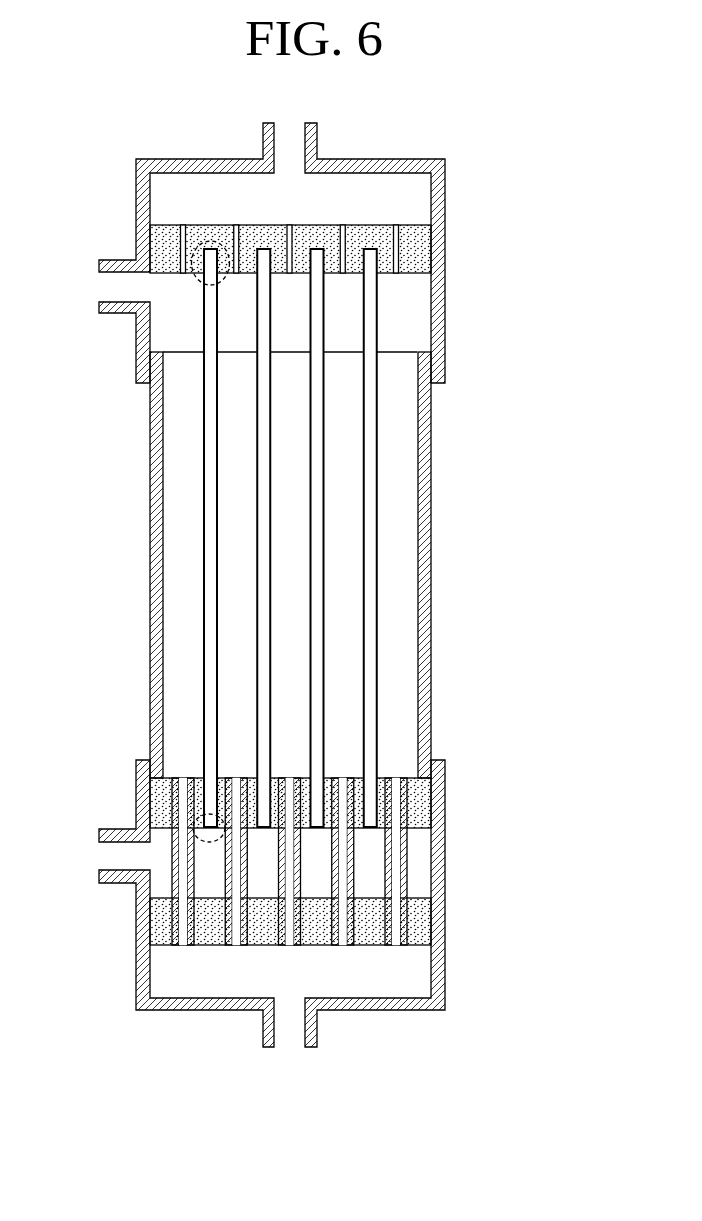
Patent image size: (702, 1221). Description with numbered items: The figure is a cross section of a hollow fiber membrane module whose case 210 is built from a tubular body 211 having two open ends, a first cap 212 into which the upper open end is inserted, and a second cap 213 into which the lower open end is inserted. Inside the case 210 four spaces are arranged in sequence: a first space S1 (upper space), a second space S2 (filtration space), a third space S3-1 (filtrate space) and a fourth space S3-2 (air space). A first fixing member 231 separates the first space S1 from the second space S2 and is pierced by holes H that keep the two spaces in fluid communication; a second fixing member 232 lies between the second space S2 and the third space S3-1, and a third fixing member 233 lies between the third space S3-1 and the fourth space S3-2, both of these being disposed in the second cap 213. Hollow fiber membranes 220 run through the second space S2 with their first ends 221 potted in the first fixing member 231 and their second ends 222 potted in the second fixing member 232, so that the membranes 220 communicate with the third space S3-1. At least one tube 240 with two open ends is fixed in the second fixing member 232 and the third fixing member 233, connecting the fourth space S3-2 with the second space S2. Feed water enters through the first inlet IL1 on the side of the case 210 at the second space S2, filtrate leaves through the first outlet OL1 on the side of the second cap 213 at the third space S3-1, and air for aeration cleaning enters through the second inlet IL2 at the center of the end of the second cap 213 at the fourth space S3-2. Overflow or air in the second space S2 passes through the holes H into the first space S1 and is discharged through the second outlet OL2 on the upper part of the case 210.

The case 210 is at (318, 575).
The tubular body 211 is at (431, 567).
The first cap 212 is at (289, 299).
The second cap 213 is at (287, 847).
The hollow fiber membranes 220 is at (204, 600).
The first end 221 is at (224, 247).
The second end 222 is at (204, 777).
The first fixing member 231 is at (378, 230).
The second fixing member 232 is at (420, 812).
The third fixing member 233 is at (420, 918).
The tube 240 is at (150, 885).
The holes H is at (184, 214).
The first space S1 is at (384, 189).
The second space S2 is at (180, 678).
The third space S3-1 is at (420, 870).
The fourth space S3-2 is at (407, 973).
The first outlet OL1 is at (100, 829).
The second outlet OL2 is at (317, 140).
The first inlet IL1 is at (105, 262).
The second inlet IL2 is at (316, 1025).